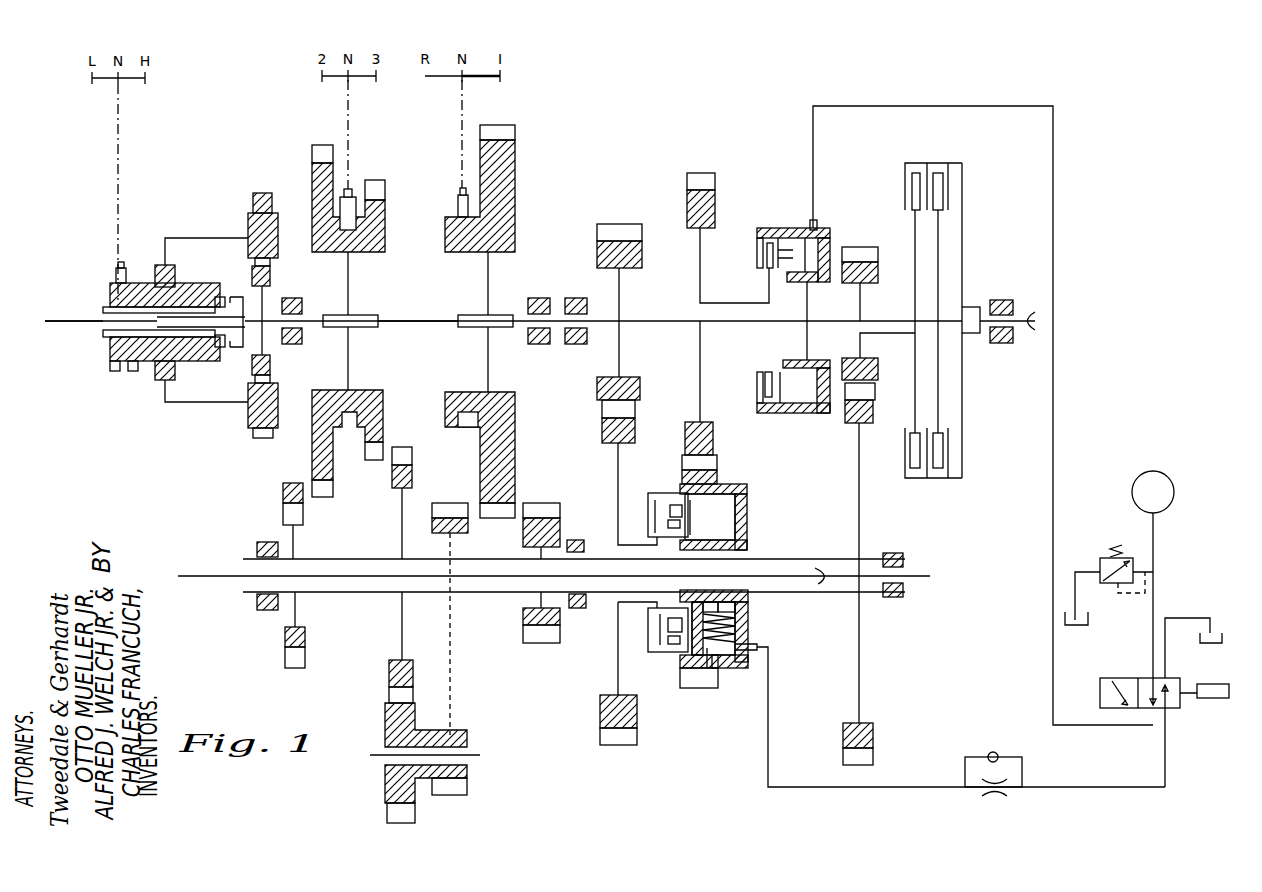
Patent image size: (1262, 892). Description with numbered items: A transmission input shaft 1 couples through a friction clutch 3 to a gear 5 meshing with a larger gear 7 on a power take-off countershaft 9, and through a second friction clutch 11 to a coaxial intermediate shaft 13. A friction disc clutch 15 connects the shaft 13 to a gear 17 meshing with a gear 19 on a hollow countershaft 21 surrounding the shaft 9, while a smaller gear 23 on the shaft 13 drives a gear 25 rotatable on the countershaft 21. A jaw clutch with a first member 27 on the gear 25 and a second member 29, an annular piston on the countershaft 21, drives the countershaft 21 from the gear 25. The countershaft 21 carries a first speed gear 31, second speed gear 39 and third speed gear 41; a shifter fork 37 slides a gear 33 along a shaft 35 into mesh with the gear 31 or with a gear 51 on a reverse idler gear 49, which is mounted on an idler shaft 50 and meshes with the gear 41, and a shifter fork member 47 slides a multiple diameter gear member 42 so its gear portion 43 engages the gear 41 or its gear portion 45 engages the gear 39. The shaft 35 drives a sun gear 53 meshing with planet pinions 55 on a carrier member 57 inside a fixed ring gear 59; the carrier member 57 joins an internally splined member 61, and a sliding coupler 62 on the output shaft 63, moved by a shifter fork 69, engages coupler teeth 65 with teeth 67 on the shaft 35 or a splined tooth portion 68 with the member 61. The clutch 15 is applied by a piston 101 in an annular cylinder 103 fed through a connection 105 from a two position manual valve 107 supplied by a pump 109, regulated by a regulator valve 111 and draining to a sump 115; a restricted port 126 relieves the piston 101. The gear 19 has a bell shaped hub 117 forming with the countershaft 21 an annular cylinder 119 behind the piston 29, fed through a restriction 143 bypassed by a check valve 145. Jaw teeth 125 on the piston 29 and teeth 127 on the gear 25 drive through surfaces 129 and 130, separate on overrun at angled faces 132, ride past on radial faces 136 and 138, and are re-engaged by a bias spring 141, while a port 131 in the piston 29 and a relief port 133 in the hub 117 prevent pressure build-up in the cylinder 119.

The input shaft 1 is at (1020, 308).
The friction clutch 3 is at (916, 173).
The gear 5 is at (860, 247).
The gear 7 is at (860, 418).
The countershaft 9 is at (200, 575).
The second friction clutch 11 is at (940, 180).
The intermediate shaft 13 is at (660, 318).
The friction disc type clutch 15 is at (765, 255).
The gear 17 is at (705, 178).
The gear 19 is at (708, 478).
The hollow countershaft 21 is at (600, 545).
The gear 23 is at (620, 224).
The gear 25 is at (612, 430).
The first member 27 is at (652, 513).
The second member 29 is at (690, 525).
The first speed gear 31 is at (543, 645).
The gear 33 is at (500, 176).
The shaft 35 is at (418, 318).
The shifter fork 37 is at (456, 205).
The second speed gear 39 is at (283, 500).
The third speed gear 41 is at (397, 477).
The multiple diameter gear member 42 is at (378, 398).
The gear portion 43 is at (378, 450).
The gear portion 45 is at (323, 490).
The shifter fork member 47 is at (352, 200).
The reverse idler gear 49 is at (389, 715).
The idler shaft 50 is at (478, 753).
The gear 51 is at (447, 503).
The sun gear 53 is at (330, 253).
The planet pinions 55 is at (278, 235).
The carrier member 57 is at (285, 272).
The ring gear 59 is at (262, 193).
The internally splined member 61 is at (163, 265).
The sliding coupler 62 is at (147, 345).
The transmission output shaft 63 is at (66, 318).
The coupler teeth 65 is at (222, 297).
The teeth 67 is at (237, 347).
The splined tooth portion 68 is at (192, 362).
The shifter fork 69 is at (118, 266).
The piston 101 is at (803, 243).
The annular cylinder 103 is at (812, 283).
The connection 105 is at (813, 150).
The two position manually controlled valve 107 is at (1130, 678).
The pump 109 is at (1165, 475).
The regulator valve 111 is at (1100, 562).
The fluid sump 115 is at (1090, 622).
The bell shaped hub 117 is at (747, 500).
The annular cylinder 119 is at (748, 600).
The jaw teeth 125 is at (675, 652).
The restricted port 126 is at (823, 230).
The teeth 127 is at (660, 640).
The surfaces 129 is at (660, 620).
The surfaces 130 is at (655, 650).
The port 131 is at (707, 670).
The angled face 132 is at (675, 497).
The relief port 133 is at (718, 660).
The radial face 136 is at (662, 505).
The radial face 138 is at (680, 514).
The bias spring 141 is at (730, 628).
The restriction 143 is at (997, 793).
The bypass check valve 145 is at (993, 752).